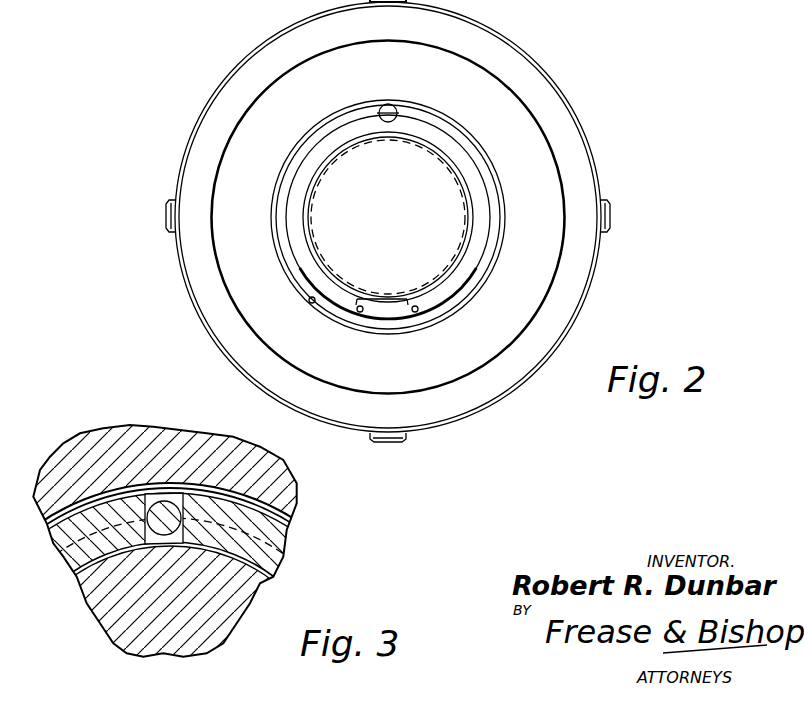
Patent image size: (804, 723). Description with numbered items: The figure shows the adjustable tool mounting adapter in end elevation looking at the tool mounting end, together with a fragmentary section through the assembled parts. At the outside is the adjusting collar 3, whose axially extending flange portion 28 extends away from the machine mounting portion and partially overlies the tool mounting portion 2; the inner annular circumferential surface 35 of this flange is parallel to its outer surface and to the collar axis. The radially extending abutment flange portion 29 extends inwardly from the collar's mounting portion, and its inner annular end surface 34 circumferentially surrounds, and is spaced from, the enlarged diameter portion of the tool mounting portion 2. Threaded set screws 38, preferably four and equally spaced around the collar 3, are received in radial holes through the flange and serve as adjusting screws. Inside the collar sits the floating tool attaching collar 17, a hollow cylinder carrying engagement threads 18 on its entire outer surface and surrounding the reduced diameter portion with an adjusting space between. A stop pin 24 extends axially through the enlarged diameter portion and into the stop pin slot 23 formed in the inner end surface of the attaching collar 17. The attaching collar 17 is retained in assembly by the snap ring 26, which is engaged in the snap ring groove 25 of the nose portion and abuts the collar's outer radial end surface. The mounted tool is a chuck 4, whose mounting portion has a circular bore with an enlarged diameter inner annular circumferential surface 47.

In FIG. 2, the tool mounting portion 2 is at (338, 173).
In FIG. 3, the tool mounting portion 2 is at (207, 594).
In FIG. 2, the adjusting collar 3 is at (594, 134).
In FIG. 3, the chuck 4 is at (288, 492).
In FIG. 2, the floating tool attaching collar 17 is at (285, 243).
In FIG. 3, the floating tool attaching collar 17 is at (84, 548).
In FIG. 2, the engagement threads 18 is at (492, 192).
In FIG. 3, the stop pin slot 23 is at (150, 494).
In FIG. 2, the stop pin 24 is at (402, 112).
In FIG. 3, the stop pin 24 is at (170, 510).
In FIG. 2, the snap ring groove 25 is at (452, 163).
In FIG. 2, the snap ring 26 is at (445, 133).
In FIG. 2, the axially extending flange portion 28 is at (562, 306).
In FIG. 2, the radially extending abutment flange portion 29 is at (476, 345).
In FIG. 2, the inner annular end surface 34 is at (312, 303).
In FIG. 3, the inner annular end surface 34 is at (84, 506).
In FIG. 2, the inner annular circumferential surface 35 is at (282, 78).
In FIG. 2, the threaded set screws 38 is at (611, 215).
In FIG. 3, the enlarged diameter inner annular circumferential surface 47 is at (120, 483).